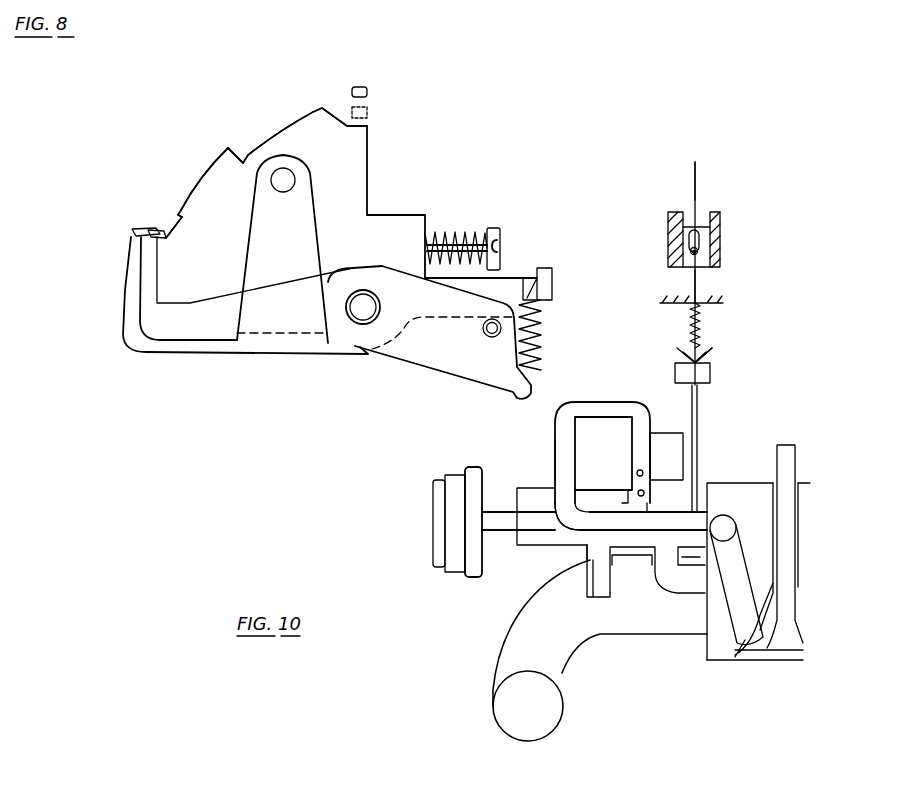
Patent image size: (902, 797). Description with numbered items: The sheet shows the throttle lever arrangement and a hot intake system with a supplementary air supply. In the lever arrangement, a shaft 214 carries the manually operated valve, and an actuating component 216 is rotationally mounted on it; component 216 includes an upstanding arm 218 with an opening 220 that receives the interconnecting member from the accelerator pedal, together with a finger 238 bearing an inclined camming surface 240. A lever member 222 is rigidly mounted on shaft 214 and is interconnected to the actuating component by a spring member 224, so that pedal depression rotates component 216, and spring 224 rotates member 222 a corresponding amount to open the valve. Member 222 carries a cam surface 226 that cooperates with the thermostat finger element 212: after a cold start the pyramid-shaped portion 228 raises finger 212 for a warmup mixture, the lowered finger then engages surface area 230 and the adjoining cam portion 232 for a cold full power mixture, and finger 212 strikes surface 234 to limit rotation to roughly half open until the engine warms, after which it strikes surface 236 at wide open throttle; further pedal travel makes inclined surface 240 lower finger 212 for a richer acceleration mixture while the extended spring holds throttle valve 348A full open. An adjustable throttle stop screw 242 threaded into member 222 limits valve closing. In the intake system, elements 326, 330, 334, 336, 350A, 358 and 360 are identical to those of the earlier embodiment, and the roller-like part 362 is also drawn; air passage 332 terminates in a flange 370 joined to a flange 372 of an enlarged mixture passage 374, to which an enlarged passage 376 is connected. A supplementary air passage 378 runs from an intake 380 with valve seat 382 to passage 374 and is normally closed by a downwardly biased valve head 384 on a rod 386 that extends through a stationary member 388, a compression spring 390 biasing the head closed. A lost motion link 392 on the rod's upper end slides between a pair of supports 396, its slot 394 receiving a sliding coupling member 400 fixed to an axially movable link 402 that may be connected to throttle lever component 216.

In FIG. 8, the finger element 212 is at (361, 84).
In FIG. 8, the shaft 214 is at (363, 309).
In FIG. 8, the actuating component 216 is at (447, 373).
In FIG. 8, the upstanding arm 218 is at (303, 207).
In FIG. 8, the opening 220 is at (286, 180).
In FIG. 8, the lever member 222 is at (367, 157).
In FIG. 8, the spring member 224 is at (541, 343).
In FIG. 8, the cam surface 226 is at (237, 130).
In FIG. 8, the pyramid-shaped portion 228 is at (322, 110).
In FIG. 8, the surface area 230 is at (273, 140).
In FIG. 8, the cam surface 232 is at (198, 180).
In FIG. 8, the surface 234 is at (232, 150).
In FIG. 8, the surface 236 is at (142, 230).
In FIG. 8, the finger 238 is at (140, 275).
In FIG. 8, the inclined camming surface 240 is at (161, 270).
In FIG. 8, the adjustable throttle stop screw 242 is at (131, 232).
In FIG. 10, the hot intake system element 326 is at (603, 399).
In FIG. 10, the hot intake system element 330 is at (431, 525).
In FIG. 10, the air passage 332 is at (558, 443).
In FIG. 10, the hot intake system element 334 is at (666, 436).
In FIG. 10, the hot intake system element 336 is at (530, 548).
In FIG. 10, the throttle valve 348A is at (639, 490).
In FIG. 10, the hot intake system element 350A is at (639, 470).
In FIG. 10, the hot intake system element 358 is at (670, 583).
In FIG. 10, the hot intake system element 360 is at (590, 597).
In FIG. 10, the roller 362 is at (500, 705).
In FIG. 10, the flange 370 is at (653, 501).
In FIG. 10, the flange 372 is at (640, 528).
In FIG. 10, the mixture passage 374 is at (641, 529).
In FIG. 10, the passage 376 is at (740, 598).
In FIG. 10, the air passage 378 is at (698, 420).
In FIG. 10, the intake 380 is at (710, 375).
In FIG. 10, the valve seat 382 is at (688, 357).
In FIG. 10, the valve head 384 is at (703, 355).
In FIG. 10, the rod 386 is at (692, 282).
In FIG. 10, the stationary member 388 is at (700, 302).
In FIG. 10, the compression spring 390 is at (703, 327).
In FIG. 10, the lost motion link 392 is at (683, 240).
In FIG. 10, the slot 394 is at (700, 235).
In FIG. 10, the supports 396 is at (713, 215).
In FIG. 10, the sliding coupling member 400 is at (700, 252).
In FIG. 10, the axially movable link 402 is at (694, 162).